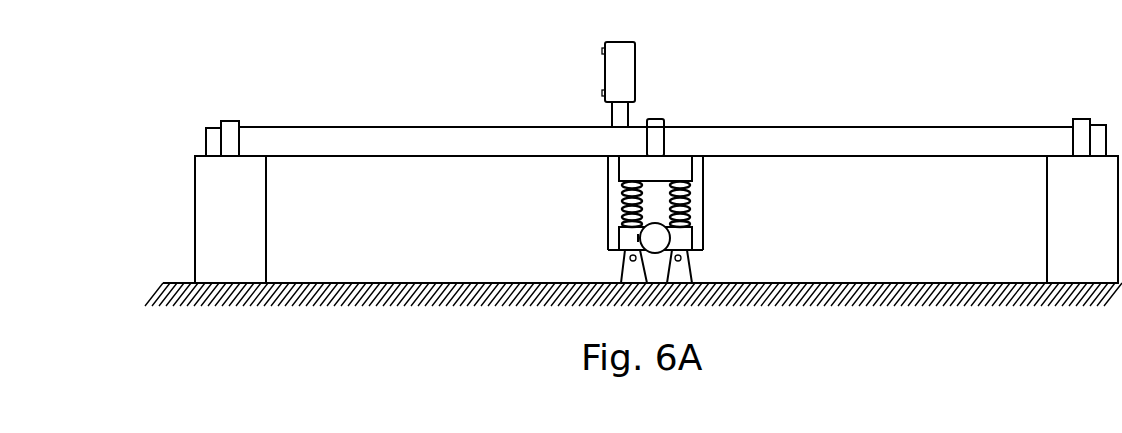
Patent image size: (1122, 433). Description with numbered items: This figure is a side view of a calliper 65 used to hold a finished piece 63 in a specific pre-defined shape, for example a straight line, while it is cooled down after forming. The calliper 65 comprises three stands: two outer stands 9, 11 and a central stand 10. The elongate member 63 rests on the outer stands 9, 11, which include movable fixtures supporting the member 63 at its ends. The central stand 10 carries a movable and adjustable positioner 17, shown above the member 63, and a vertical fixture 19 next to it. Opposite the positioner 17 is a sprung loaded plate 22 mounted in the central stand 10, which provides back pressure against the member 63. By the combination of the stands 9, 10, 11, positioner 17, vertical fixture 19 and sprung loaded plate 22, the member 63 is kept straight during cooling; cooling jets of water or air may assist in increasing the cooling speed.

The outer stand 9 is at (229, 243).
The outer stand 11 is at (1077, 207).
The finished piece 63 is at (416, 143).
The positioner 17 is at (620, 62).
The vertical fixture 19 is at (657, 143).
The sprung loaded plate 22 is at (672, 173).
The central stand 10 is at (692, 207).
The calliper 65 is at (633, 158).